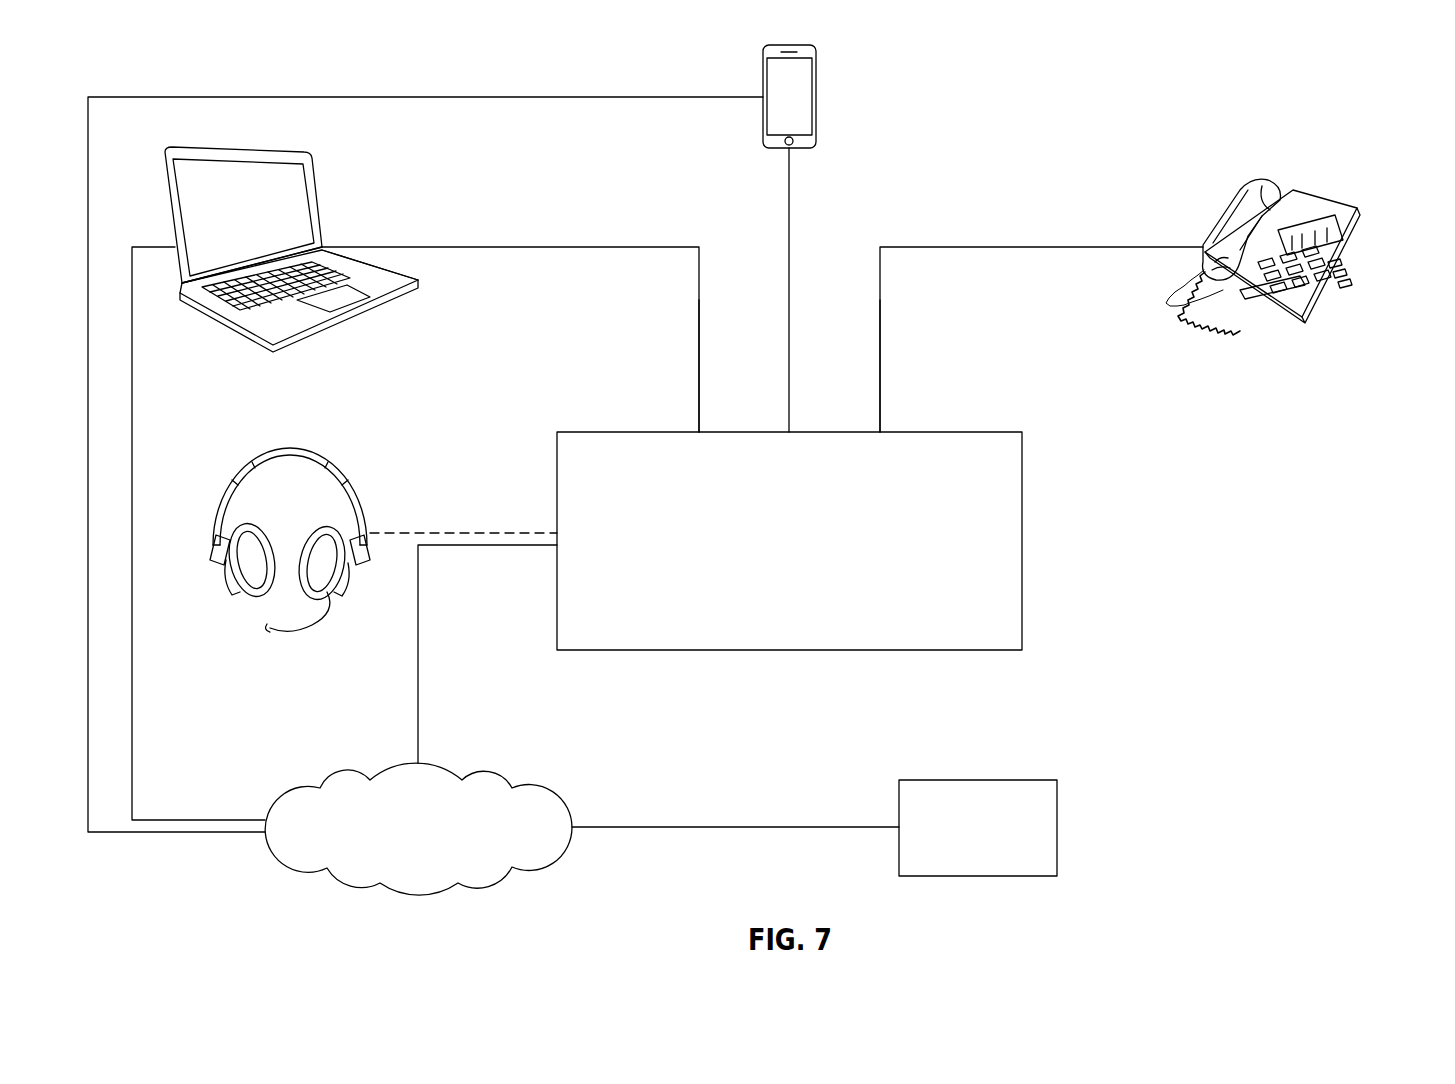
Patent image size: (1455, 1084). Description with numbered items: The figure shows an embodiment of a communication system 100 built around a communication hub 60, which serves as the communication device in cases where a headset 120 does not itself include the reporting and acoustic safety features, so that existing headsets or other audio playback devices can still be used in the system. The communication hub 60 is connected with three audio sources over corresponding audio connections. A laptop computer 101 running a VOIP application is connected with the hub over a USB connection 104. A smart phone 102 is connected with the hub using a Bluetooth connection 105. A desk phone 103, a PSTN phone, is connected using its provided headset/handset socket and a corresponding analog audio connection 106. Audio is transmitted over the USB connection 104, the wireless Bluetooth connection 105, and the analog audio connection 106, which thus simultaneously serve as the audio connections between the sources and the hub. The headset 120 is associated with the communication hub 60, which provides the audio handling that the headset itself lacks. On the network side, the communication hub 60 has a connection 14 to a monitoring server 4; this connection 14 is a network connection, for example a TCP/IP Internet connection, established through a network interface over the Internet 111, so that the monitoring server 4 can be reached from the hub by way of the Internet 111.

The communication system 100 is at (1322, 86).
The laptop computer 101 is at (315, 172).
The smart phone 102 is at (818, 97).
The desk phone 103 is at (1363, 212).
The USB connection 104 is at (699, 362).
The Bluetooth connection 105 is at (792, 220).
The analog audio connection 106 is at (880, 362).
The connection 14 is at (418, 657).
The communication hub 60 is at (1023, 462).
The monitoring server 4 is at (1057, 827).
The Internet 111 is at (338, 773).
The headset 120 is at (285, 448).